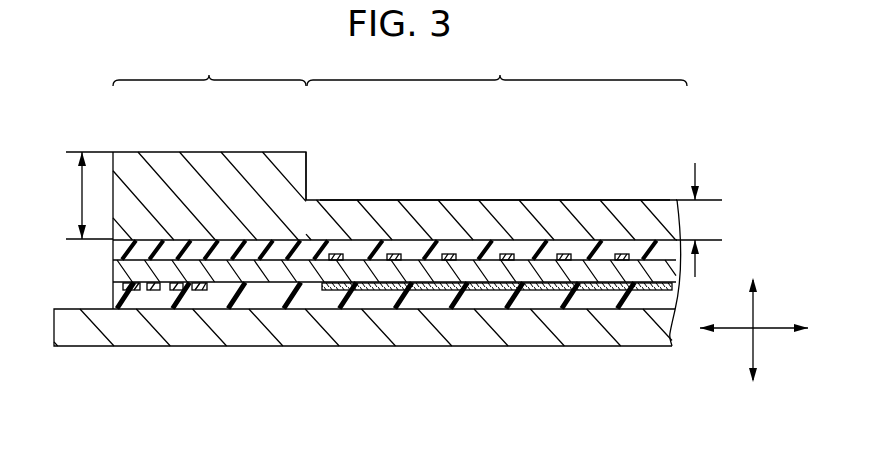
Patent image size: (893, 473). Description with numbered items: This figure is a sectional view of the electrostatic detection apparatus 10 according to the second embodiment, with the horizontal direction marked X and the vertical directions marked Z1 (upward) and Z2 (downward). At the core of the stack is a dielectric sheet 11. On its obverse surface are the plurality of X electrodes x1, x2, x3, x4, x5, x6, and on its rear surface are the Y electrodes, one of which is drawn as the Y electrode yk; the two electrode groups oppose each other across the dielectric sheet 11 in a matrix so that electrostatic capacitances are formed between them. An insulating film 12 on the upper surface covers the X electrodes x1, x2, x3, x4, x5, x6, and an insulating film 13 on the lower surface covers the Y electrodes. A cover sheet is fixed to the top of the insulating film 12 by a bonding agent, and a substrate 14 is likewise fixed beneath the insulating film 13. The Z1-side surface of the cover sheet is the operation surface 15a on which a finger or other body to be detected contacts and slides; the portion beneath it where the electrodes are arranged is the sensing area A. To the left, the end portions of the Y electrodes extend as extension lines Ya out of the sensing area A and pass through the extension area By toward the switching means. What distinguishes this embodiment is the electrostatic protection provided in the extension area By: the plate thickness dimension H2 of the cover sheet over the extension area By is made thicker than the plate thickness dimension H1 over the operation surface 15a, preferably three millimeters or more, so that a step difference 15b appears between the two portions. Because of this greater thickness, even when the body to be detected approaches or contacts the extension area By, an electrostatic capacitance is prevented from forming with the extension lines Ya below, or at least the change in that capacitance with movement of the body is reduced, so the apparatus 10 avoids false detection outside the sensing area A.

The electrostatic detection apparatus 10 is at (111, 148).
The dielectric sheet 11 is at (113, 271).
The insulating film 12 is at (113, 249).
The insulating film 13 is at (113, 296).
The substrate 14 is at (86, 348).
The operation surface 15a is at (621, 200).
The step difference 15b is at (323, 162).
The X electrode x1 is at (336, 253).
The X electrode x2 is at (394, 253).
The X electrode x3 is at (449, 253).
The X electrode x4 is at (507, 253).
The X electrode x5 is at (564, 253).
The X electrode x6 is at (622, 253).
The extension line Ya is at (199, 291).
The Y electrode yk is at (533, 291).
The extension area By is at (209, 67).
The sensing area A is at (497, 67).
The plate thickness dimension H1 is at (702, 220).
The plate thickness dimension H2 is at (80, 195).
The X direction X is at (765, 330).
The Z1 side Z1 is at (752, 290).
The Z2 side Z2 is at (752, 370).